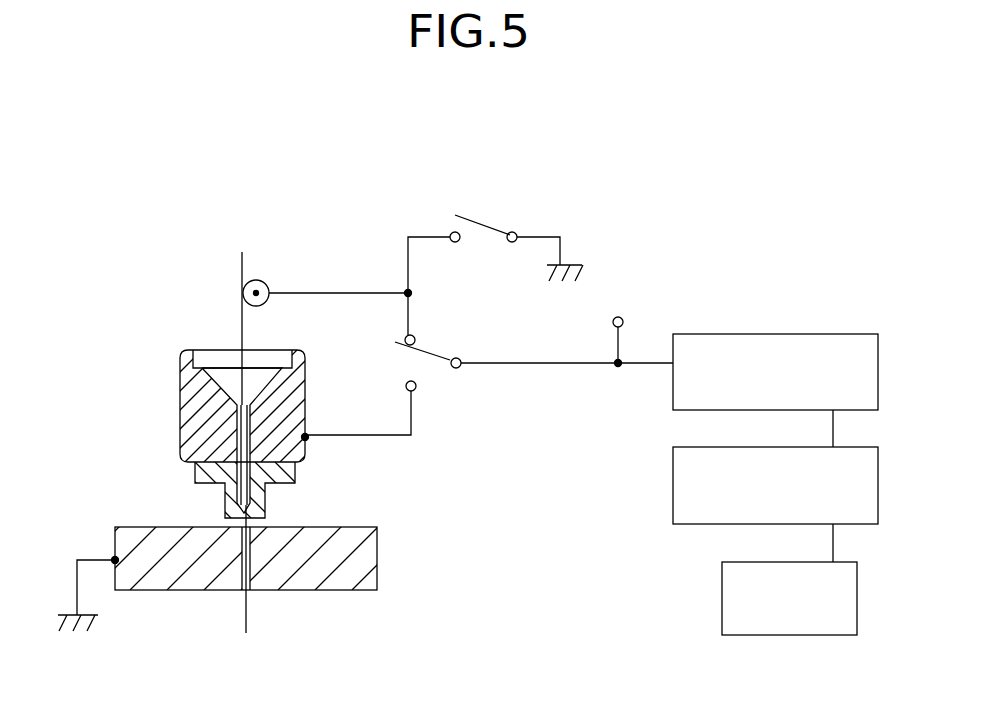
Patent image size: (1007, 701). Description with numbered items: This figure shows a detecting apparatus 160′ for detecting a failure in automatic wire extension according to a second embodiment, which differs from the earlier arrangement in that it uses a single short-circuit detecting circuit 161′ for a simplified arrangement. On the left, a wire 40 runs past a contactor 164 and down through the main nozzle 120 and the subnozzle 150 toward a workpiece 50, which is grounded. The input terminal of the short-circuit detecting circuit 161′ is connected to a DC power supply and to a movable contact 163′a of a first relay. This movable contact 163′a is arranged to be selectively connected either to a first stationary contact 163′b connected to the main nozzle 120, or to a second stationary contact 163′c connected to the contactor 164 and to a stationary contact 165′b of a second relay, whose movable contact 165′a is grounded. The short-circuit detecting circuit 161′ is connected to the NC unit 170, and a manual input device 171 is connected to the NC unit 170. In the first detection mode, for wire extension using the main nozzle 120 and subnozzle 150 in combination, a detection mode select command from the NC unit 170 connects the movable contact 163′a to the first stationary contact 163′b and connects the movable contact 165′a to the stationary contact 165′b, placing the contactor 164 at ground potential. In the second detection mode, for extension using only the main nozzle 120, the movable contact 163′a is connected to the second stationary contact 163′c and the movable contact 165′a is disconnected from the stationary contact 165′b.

The wire electrode 40 is at (241, 318).
The contactor 164 is at (265, 283).
The main nozzle 120 is at (188, 408).
The subnozzle 150 is at (195, 470).
The workpiece 50 is at (350, 527).
The stationary contact of second relay 165′b is at (451, 232).
The movable contact of second relay 165′a is at (474, 216).
The second stationary contact 163′c is at (406, 337).
The movable contact of first relay 163′a is at (437, 353).
The first stationary contact 163′b is at (407, 390).
The detecting apparatus 160′ is at (666, 246).
The short-circuit detecting circuit 161′ is at (775, 334).
The NC unit 170 is at (673, 478).
The manual input device 171 is at (722, 590).